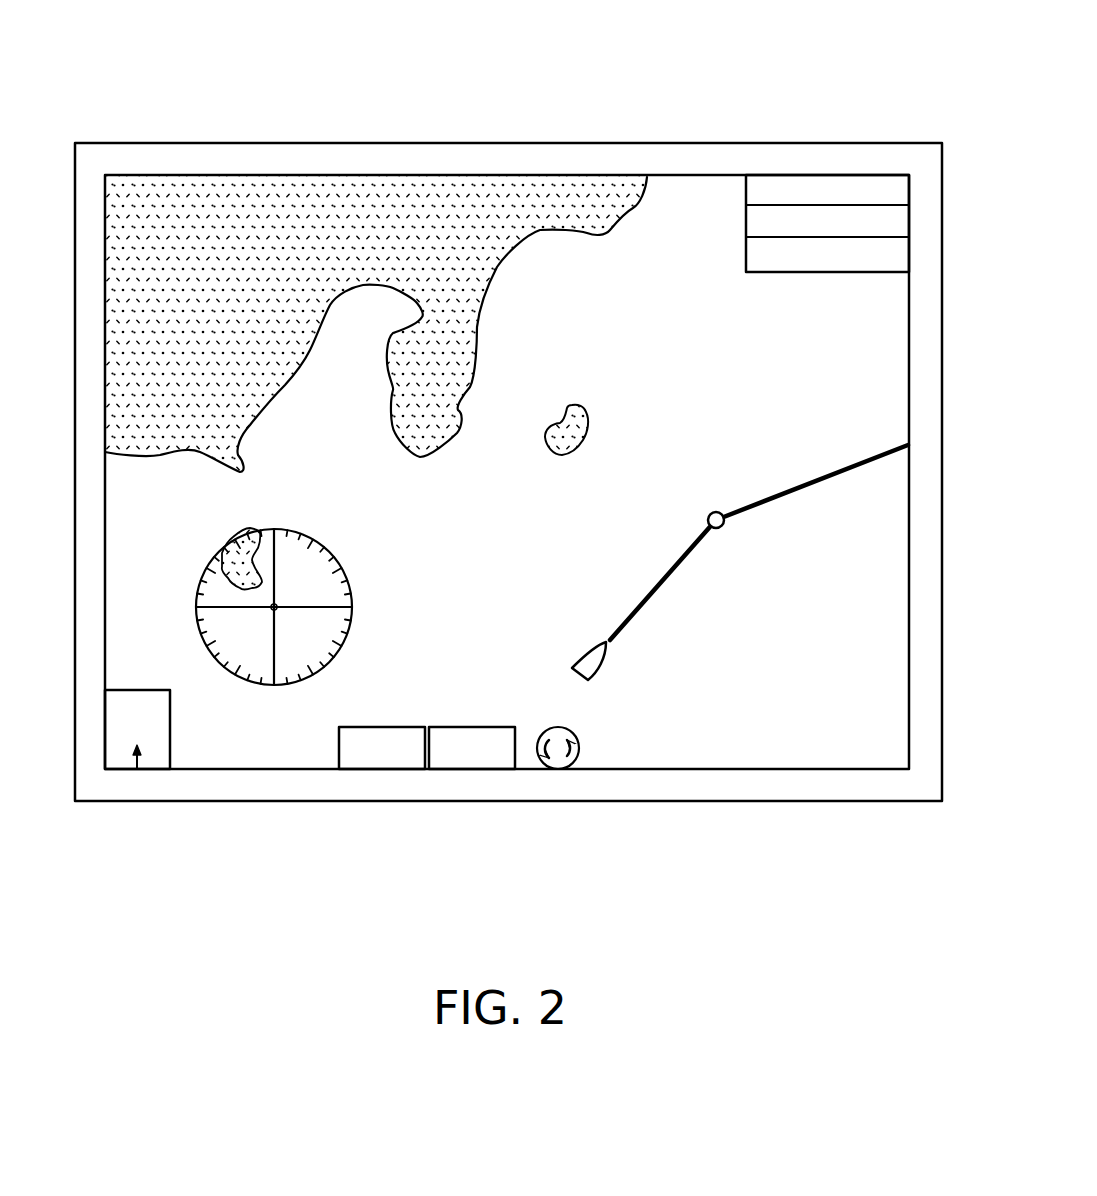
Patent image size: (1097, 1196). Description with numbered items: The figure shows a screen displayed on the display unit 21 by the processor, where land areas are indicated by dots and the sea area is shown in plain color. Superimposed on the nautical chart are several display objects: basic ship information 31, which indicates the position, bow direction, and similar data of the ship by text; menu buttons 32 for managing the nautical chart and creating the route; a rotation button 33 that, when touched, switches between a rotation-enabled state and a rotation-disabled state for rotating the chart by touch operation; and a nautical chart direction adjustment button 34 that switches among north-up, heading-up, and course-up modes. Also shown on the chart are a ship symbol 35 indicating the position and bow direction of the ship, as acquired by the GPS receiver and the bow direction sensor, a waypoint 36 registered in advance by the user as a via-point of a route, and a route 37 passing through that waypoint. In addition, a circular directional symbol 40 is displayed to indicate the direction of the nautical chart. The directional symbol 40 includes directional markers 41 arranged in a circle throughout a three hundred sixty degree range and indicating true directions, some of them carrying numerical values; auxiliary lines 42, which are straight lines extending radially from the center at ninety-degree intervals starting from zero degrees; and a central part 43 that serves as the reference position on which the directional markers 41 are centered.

The display unit 21 is at (98, 132).
The basic ship information 31 is at (817, 177).
The menu buttons 32 is at (402, 765).
The rotation button 33 is at (558, 767).
The nautical chart direction adjustment button 34 is at (122, 762).
The ship symbol 35 is at (594, 667).
The waypoint 36 is at (720, 528).
The route 37 is at (648, 598).
The directional symbol 40 is at (264, 709).
The directional markers 41 is at (215, 657).
The auxiliary lines 42 is at (268, 650).
The central part 43 is at (280, 614).